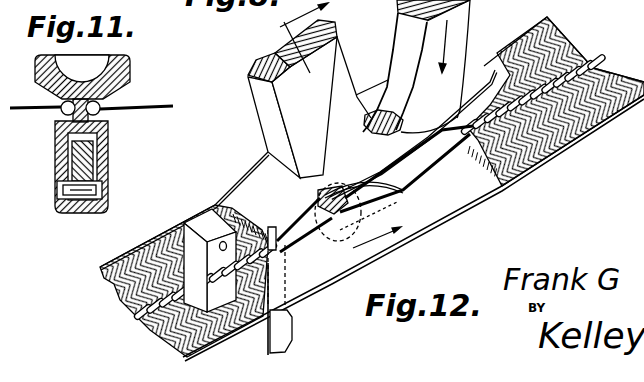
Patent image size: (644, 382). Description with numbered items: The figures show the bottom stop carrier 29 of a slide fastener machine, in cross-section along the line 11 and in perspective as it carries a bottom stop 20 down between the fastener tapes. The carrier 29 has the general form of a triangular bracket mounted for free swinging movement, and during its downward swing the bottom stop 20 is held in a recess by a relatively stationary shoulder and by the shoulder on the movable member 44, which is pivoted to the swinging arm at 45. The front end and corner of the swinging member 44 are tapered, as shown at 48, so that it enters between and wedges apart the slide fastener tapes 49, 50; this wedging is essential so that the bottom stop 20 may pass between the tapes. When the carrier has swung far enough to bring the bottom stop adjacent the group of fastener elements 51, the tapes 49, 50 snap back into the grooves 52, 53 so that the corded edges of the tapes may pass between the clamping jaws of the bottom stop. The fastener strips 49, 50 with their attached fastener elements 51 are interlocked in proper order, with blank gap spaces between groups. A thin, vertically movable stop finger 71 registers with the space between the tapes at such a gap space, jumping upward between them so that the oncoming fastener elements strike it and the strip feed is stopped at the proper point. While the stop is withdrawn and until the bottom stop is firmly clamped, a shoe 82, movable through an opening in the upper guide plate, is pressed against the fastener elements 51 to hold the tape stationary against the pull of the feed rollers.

In FIG. 12, the section line 11 is at (340, 133).
In FIG. 12, the bottom stop 20 is at (318, 192).
In FIG. 11, the bottom stop carrier 29 is at (112, 78).
In FIG. 12, the bottom stop carrier 29 is at (352, 70).
In FIG. 11, the movable member 44 is at (82, 215).
In FIG. 11, the pivot 45 is at (101, 192).
In FIG. 12, the tapered front end and corner 48 is at (320, 205).
In FIG. 11, the slide fastener tape 49 is at (37, 110).
In FIG. 12, the slide fastener tape 49 is at (484, 62).
In FIG. 11, the slide fastener tape 50 is at (122, 112).
In FIG. 12, the slide fastener tape 50 is at (515, 161).
In FIG. 12, the fastener elements 51 is at (141, 308).
In FIG. 11, the groove 52 is at (62, 103).
In FIG. 11, the groove 53 is at (100, 104).
In FIG. 12, the groove 53 is at (404, 190).
In FIG. 12, the stop finger 71 is at (284, 337).
In FIG. 12, the shoe 82 is at (201, 231).